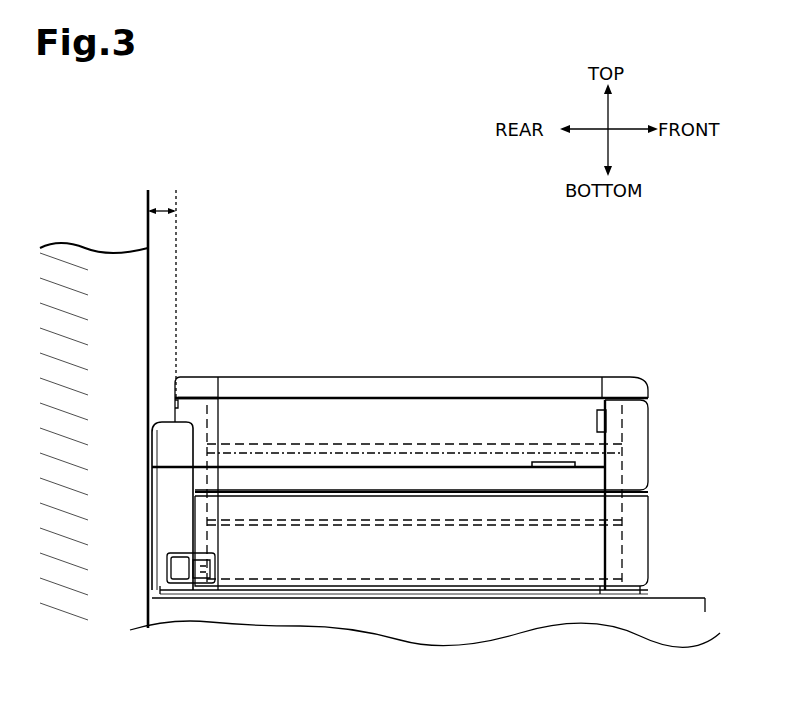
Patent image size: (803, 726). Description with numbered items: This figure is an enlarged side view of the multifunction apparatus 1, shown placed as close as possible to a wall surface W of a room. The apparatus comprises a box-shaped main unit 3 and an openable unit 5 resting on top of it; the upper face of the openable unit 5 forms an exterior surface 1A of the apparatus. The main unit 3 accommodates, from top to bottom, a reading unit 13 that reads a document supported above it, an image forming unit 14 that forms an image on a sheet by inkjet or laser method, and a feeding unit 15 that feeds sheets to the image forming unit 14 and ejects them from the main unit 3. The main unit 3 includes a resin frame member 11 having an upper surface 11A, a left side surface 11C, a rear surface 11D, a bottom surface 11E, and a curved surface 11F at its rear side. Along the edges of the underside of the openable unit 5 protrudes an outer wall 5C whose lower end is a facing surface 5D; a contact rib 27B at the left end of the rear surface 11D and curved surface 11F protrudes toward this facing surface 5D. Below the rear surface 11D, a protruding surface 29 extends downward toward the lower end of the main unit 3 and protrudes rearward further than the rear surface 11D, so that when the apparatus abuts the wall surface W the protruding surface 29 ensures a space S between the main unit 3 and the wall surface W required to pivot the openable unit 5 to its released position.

The multifunction apparatus 1 is at (402, 488).
The exterior surface 1A is at (303, 376).
The main unit 3 is at (437, 545).
The openable unit 5 is at (438, 361).
The outer wall 5C is at (641, 383).
The facing surface 5D is at (207, 399).
The frame member 11 is at (402, 438).
The upper surface 11A is at (243, 400).
The left side surface 11C is at (476, 418).
The rear surface 11D is at (154, 425).
The bottom surface 11E is at (358, 470).
The curved surface 11F is at (176, 396).
The reading unit 13 is at (650, 422).
The image forming unit 14 is at (612, 472).
The feeding unit 15 is at (612, 562).
The contact rib 27B is at (166, 407).
The protruding surface 29 is at (147, 530).
The space S is at (160, 206).
The wall surface W is at (113, 277).